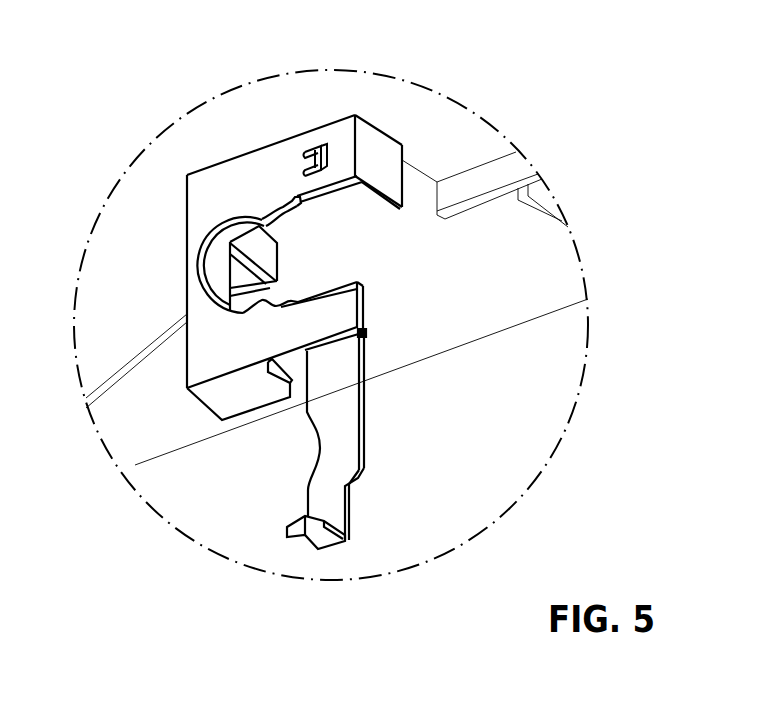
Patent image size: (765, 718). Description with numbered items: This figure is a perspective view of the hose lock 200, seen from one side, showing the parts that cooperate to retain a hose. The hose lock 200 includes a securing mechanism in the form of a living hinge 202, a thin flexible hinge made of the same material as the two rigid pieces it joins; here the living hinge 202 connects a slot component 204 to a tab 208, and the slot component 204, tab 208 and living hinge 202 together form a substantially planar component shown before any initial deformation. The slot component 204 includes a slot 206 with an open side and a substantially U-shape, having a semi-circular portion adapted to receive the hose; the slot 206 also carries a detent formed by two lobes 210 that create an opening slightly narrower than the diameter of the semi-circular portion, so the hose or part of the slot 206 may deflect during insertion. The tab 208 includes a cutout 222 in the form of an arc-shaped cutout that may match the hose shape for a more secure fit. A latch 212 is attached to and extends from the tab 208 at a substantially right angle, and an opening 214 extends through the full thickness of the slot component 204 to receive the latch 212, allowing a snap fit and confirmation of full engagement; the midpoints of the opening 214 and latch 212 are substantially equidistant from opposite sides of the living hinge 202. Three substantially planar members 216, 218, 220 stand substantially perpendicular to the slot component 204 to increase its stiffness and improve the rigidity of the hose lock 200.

The hose lock 200 is at (408, 255).
The living hinge 202 is at (365, 336).
The slot component 204 is at (210, 210).
The slot 206 is at (222, 275).
The tab 208 is at (347, 433).
The lobes 210 is at (272, 212).
The latch 212 is at (317, 537).
The opening 214 is at (327, 148).
The member 216 is at (298, 233).
The member 218 is at (224, 397).
The member 220 is at (382, 165).
The cutout 222 is at (308, 448).